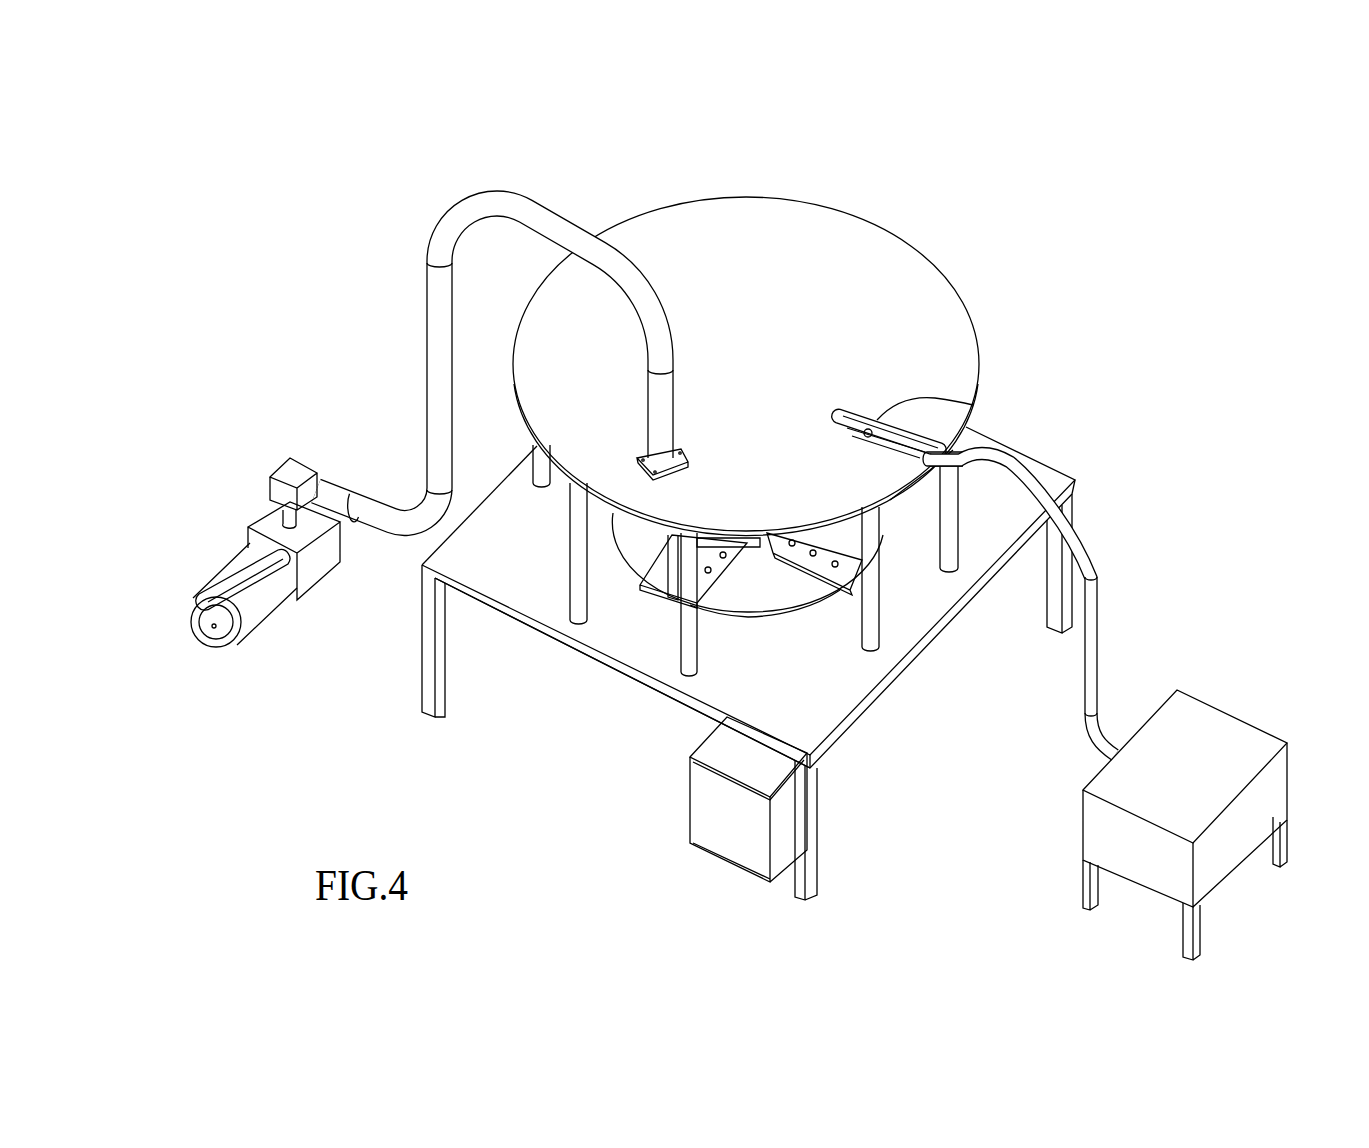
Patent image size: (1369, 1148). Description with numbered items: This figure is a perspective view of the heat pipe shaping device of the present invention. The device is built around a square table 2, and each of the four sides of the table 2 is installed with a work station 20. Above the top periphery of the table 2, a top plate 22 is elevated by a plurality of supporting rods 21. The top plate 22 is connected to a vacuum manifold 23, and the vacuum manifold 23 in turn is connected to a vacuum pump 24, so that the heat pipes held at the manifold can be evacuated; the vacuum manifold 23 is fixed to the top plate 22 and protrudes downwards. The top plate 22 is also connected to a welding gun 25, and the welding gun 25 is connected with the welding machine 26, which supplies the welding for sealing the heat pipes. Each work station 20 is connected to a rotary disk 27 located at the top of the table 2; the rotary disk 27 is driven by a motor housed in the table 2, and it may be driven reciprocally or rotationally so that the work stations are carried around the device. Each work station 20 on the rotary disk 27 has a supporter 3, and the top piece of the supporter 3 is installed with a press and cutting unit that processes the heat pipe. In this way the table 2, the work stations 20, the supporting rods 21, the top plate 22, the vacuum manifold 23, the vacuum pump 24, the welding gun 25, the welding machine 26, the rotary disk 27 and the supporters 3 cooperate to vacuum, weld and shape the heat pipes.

The table 2 is at (600, 690).
The supporter 3 is at (847, 575).
The work station 20 is at (660, 640).
The supporting rods 21 is at (575, 560).
The top plate 22 is at (742, 217).
The vacuum manifold 23 is at (533, 205).
The vacuum pump 24 is at (270, 517).
The welding gun 25 is at (872, 430).
The welding machine 26 is at (1222, 722).
The rotary disk 27 is at (775, 598).